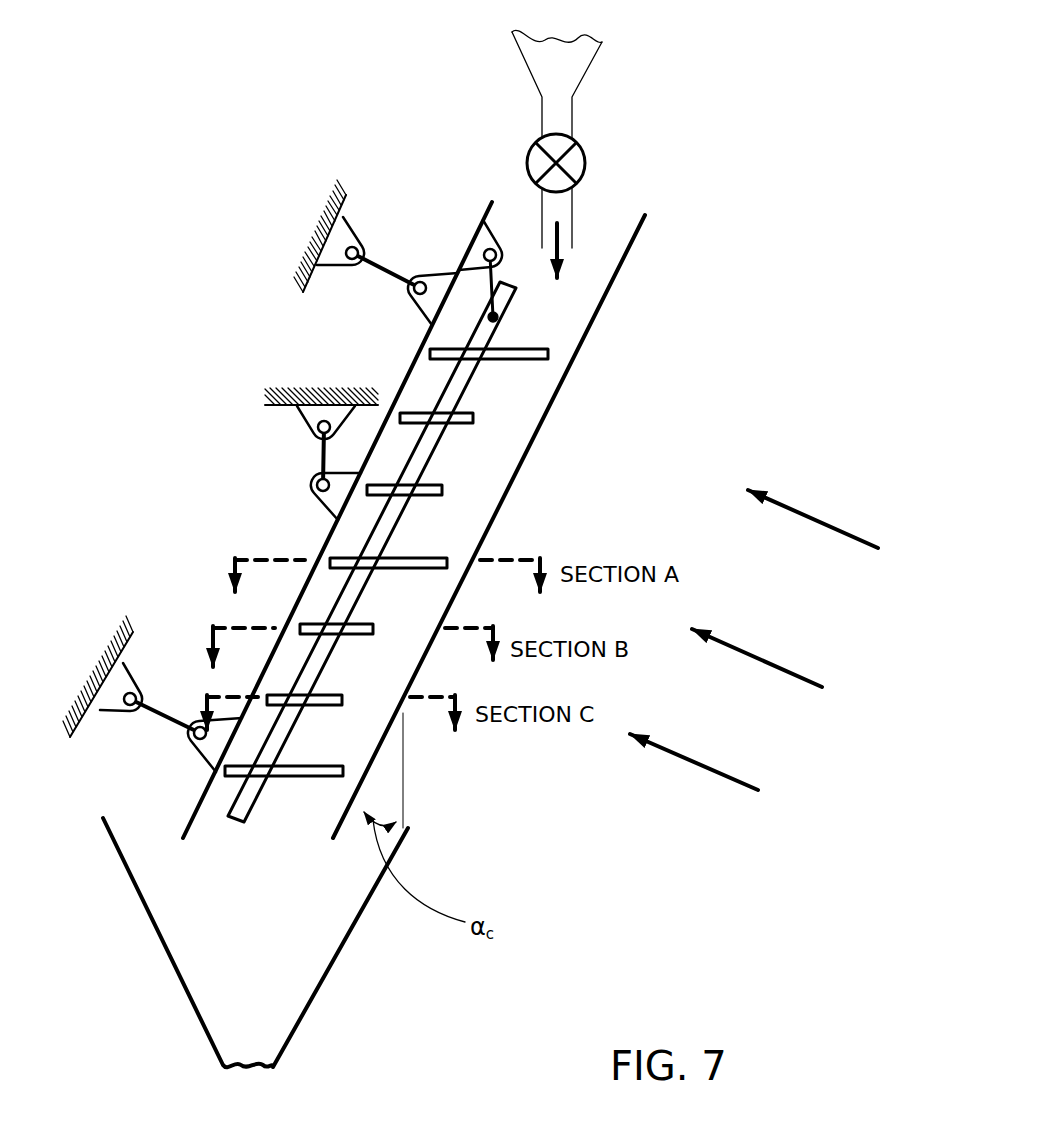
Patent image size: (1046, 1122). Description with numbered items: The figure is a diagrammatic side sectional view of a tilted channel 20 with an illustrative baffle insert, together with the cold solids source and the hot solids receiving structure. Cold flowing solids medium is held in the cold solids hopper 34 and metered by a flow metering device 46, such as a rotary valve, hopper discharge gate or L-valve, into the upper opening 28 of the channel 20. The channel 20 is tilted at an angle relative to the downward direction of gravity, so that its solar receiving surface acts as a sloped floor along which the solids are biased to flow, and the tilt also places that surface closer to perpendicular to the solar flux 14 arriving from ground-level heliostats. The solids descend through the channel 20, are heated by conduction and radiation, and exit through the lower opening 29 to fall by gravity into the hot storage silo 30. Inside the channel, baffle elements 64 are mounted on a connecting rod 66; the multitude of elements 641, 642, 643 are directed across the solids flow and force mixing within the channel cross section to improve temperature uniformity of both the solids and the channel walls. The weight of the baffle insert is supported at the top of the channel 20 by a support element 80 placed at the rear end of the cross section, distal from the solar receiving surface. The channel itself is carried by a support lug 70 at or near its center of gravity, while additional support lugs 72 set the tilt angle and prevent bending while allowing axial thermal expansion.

The solar flux 14 is at (728, 647).
The channel 20 is at (427, 383).
The upper opening 28 is at (607, 210).
The lower opening 29 is at (300, 808).
The hot storage silo 30 is at (280, 993).
The cold solids hopper 34 is at (563, 55).
The flow metering device 46 is at (573, 165).
The baffle elements 64 is at (451, 561).
The first baffle element 641 is at (520, 352).
The second baffle element 642 is at (467, 417).
The third baffle element 643 is at (430, 487).
The connecting rod 66 is at (507, 300).
The support lug 70 is at (307, 480).
The additional support lugs 72 is at (493, 238).
The support element 80 is at (437, 277).